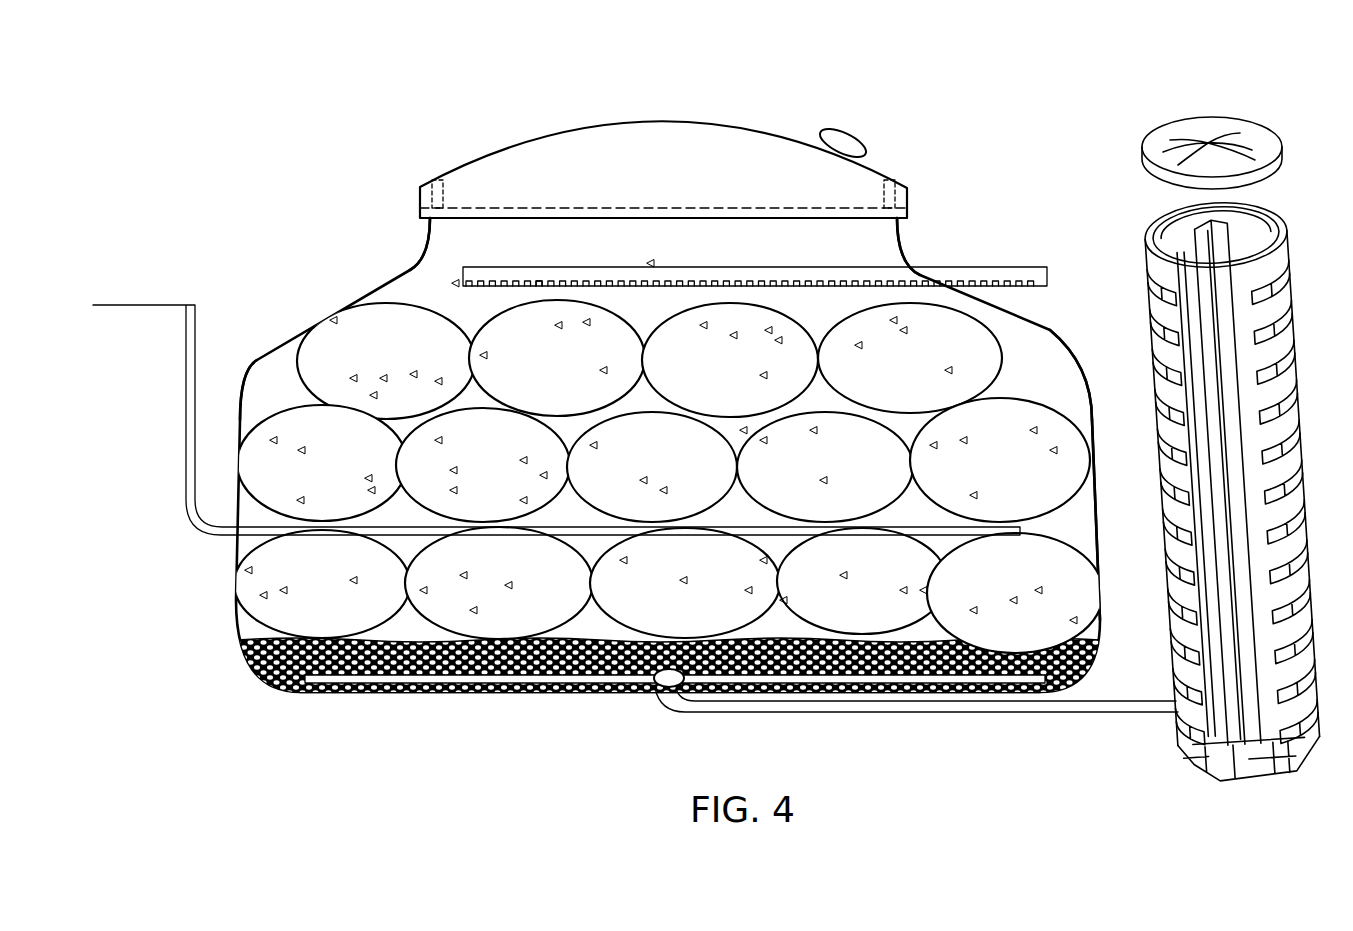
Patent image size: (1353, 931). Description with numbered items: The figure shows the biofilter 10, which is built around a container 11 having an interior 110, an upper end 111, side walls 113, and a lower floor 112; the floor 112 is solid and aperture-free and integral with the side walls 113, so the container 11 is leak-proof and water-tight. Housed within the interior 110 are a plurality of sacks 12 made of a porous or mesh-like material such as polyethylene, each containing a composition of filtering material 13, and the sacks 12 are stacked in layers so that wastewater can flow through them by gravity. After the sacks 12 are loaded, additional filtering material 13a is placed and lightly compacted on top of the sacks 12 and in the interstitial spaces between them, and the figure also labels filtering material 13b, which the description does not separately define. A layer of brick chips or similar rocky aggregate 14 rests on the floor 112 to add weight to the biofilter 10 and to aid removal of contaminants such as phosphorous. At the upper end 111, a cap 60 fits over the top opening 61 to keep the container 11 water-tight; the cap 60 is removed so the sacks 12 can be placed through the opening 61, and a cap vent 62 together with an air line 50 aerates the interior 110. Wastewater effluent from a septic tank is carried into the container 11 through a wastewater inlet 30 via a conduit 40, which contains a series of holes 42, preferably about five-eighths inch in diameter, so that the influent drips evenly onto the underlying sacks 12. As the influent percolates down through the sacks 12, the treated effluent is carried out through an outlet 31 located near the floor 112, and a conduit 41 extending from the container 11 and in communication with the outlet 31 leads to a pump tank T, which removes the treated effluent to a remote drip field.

The biofilter 10 is at (978, 95).
The container 11 is at (347, 302).
The sacks 12 is at (280, 367).
The filtering material 13 is at (730, 300).
The additional filtering material 13a is at (438, 277).
The particles near plate 13b is at (647, 263).
The brick chips 14 is at (288, 678).
The wastewater inlet 30 is at (933, 267).
The outlet 31 is at (650, 695).
The conduit 40 is at (817, 267).
The conduit 41 is at (833, 708).
The holes 42 is at (537, 284).
The air line 50 is at (187, 352).
The cap 60 is at (518, 158).
The top opening 61 is at (548, 208).
The cap vent 62 is at (850, 135).
The interior 110 is at (1063, 355).
The upper end 111 is at (932, 227).
The lower floor 112 is at (557, 692).
The side walls 113 is at (243, 430).
The pump tank T is at (1267, 217).